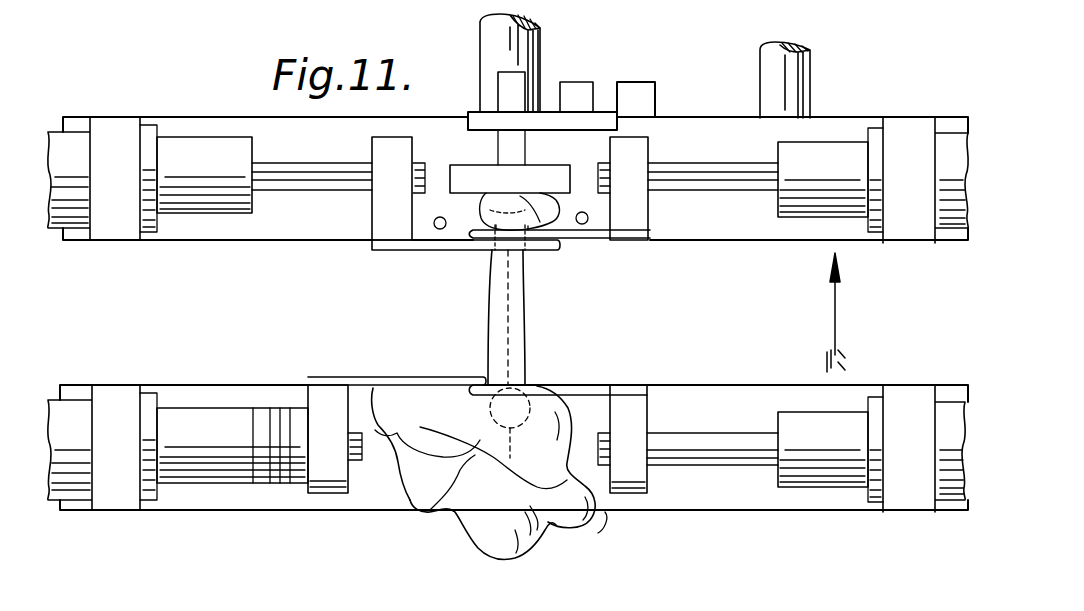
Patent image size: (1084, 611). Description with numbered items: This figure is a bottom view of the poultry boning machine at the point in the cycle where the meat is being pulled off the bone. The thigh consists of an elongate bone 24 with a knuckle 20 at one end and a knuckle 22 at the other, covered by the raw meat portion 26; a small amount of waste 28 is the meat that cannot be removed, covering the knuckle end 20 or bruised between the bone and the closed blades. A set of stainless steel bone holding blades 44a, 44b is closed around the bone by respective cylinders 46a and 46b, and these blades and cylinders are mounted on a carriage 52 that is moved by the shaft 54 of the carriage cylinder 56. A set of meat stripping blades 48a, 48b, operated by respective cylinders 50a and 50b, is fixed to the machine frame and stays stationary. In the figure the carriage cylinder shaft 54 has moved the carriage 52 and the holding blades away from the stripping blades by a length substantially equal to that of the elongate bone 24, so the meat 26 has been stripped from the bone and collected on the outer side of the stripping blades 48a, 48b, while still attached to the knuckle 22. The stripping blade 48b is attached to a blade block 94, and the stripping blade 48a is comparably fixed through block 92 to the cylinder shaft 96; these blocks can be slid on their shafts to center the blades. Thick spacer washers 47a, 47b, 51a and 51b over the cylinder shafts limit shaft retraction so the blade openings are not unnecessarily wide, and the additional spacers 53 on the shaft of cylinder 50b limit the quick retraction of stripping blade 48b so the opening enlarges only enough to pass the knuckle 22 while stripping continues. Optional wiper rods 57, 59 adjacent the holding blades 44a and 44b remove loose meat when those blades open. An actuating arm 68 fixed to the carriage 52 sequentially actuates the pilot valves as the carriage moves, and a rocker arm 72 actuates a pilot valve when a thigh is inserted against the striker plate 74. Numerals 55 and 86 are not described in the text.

The knuckle 20 is at (519, 189).
The knuckle 22 is at (489, 459).
The elongate bone 24 is at (520, 318).
The meat portion 26 is at (478, 523).
The waste 28 is at (558, 200).
The holding blade 44a is at (580, 235).
The holding blade 44b is at (452, 245).
The cylinder 46a is at (947, 140).
The cylinder 46b is at (78, 138).
The spacer washer 47a is at (823, 179).
The spacer washer 47b is at (204, 175).
The stripping blade 48a is at (555, 390).
The stripping blade 48b is at (372, 380).
The cylinder 50a is at (913, 500).
The cylinder 50b is at (115, 395).
The spacer washer 51a is at (823, 449).
The spacer washer 51b is at (232, 445).
The carriage 52 is at (672, 130).
The spacers 53 is at (295, 415).
The shaft 54 is at (480, 42).
The left upper piston rod 55 is at (330, 170).
The carriage cylinder 56 is at (740, 152).
The wiper rod 57 is at (432, 222).
The wiper rod 59 is at (590, 217).
The actuating arm 68 is at (800, 84).
The rocker arm 72 is at (604, 92).
The striker plate 74 is at (541, 165).
The left guide block 86 is at (398, 140).
The blade block 92 is at (637, 490).
The blade block 94 is at (330, 483).
The cylinder shaft 96 is at (727, 438).